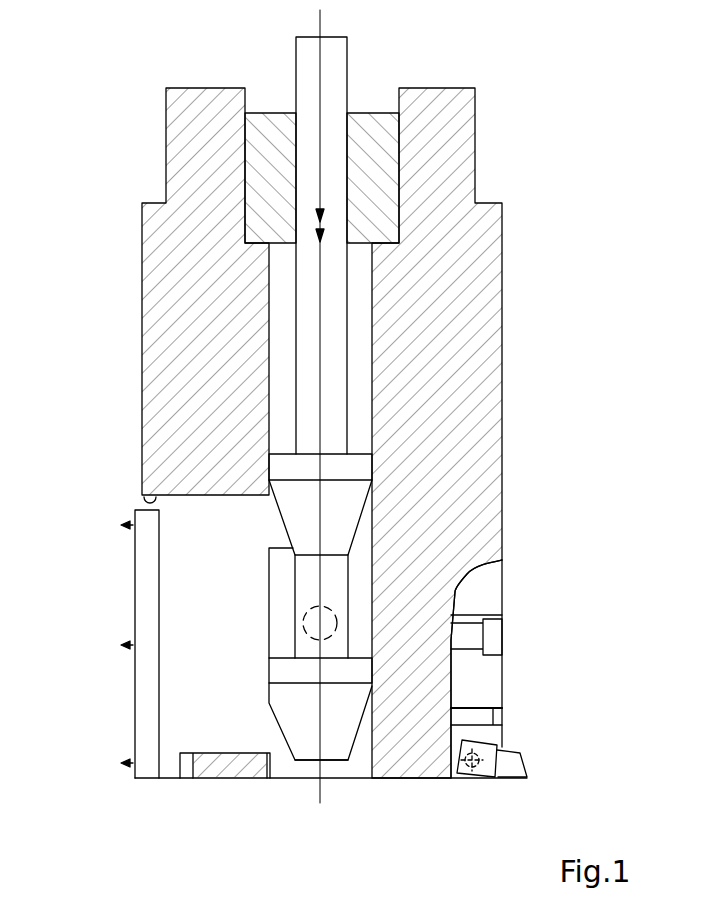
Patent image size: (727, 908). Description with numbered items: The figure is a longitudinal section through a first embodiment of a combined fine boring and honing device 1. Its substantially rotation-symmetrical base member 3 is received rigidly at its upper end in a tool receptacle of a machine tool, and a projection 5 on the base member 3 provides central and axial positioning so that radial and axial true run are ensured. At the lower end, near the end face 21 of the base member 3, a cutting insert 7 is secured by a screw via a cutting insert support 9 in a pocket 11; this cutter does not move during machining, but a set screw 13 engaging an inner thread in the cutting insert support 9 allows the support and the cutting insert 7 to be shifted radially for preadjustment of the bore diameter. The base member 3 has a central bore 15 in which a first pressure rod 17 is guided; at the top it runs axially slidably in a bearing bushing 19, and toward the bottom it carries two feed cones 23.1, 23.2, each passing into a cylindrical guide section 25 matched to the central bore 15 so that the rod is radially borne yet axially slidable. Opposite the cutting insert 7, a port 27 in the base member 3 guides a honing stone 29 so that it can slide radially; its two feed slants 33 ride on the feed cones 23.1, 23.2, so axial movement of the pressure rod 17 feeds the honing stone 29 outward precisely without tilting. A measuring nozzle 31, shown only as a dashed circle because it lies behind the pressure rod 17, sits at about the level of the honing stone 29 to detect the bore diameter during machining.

The device 1 is at (562, 361).
The base member 3 is at (480, 278).
The projection 5 is at (502, 141).
The cutting insert 7 is at (512, 765).
The cutting insert support 9 is at (497, 690).
The pocket 11 is at (456, 590).
The set screw 13 is at (480, 719).
The central bore 15 is at (372, 410).
The first pressure rod 17 is at (310, 366).
The bearing bushing 19 is at (270, 136).
The end face 21 is at (215, 777).
The feed cone 23.1 is at (353, 745).
The feed cone 23.2 is at (357, 530).
The cylindrical guide section 25 is at (360, 464).
The port 27 is at (137, 505).
The honing stone 29 is at (218, 500).
The measuring nozzle 31 is at (338, 628).
The feed slant 33 is at (290, 535).